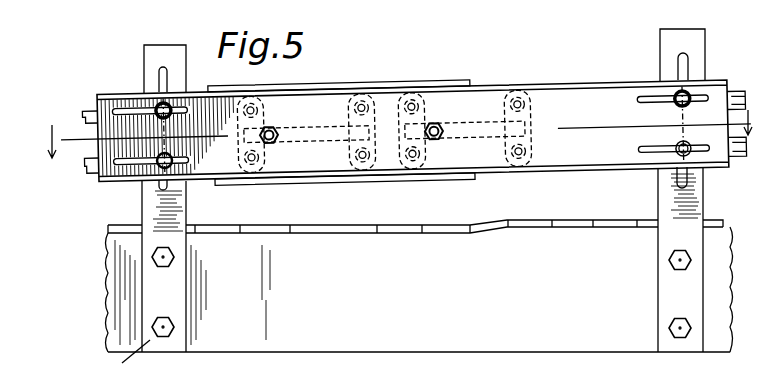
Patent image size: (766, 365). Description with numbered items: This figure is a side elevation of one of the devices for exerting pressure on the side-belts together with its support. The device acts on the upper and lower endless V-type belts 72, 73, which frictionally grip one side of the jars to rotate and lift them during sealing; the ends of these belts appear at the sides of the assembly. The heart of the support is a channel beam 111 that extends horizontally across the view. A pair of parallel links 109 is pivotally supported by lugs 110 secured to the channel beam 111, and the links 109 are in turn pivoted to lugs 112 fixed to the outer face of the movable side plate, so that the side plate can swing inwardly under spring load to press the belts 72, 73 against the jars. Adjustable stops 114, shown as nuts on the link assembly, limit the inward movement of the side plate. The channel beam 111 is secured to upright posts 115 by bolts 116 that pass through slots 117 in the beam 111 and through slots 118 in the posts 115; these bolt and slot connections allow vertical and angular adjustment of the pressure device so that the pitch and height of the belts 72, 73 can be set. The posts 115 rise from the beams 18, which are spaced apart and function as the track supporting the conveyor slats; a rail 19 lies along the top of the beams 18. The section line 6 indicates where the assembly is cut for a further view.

The section line 6- 6 is at (394, 134).
The beams 18 is at (312, 319).
The ledge rail 19 is at (436, 231).
The upper endless V-type belt 72 is at (84, 110).
The lower endless V-type belt 73 is at (90, 170).
The parallel links 109 is at (316, 126).
The lugs 110 is at (428, 158).
The channel beam 111 is at (552, 82).
The lugs 112 is at (527, 107).
The adjustable stops 114 is at (277, 140).
The posts 115 is at (663, 243).
The bolts 116 is at (181, 100).
The slots 117 is at (128, 112).
The slots 118 is at (167, 80).